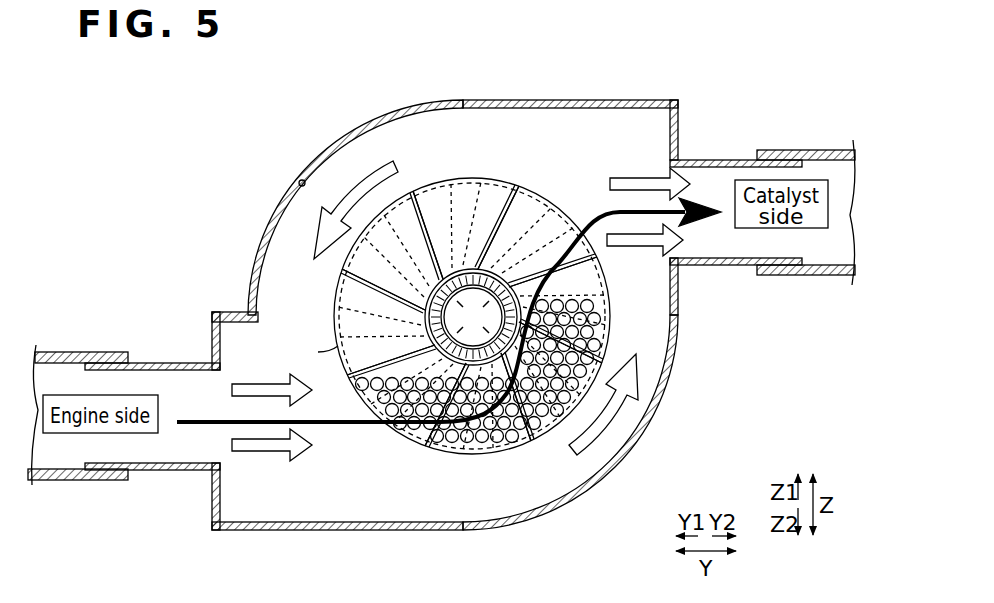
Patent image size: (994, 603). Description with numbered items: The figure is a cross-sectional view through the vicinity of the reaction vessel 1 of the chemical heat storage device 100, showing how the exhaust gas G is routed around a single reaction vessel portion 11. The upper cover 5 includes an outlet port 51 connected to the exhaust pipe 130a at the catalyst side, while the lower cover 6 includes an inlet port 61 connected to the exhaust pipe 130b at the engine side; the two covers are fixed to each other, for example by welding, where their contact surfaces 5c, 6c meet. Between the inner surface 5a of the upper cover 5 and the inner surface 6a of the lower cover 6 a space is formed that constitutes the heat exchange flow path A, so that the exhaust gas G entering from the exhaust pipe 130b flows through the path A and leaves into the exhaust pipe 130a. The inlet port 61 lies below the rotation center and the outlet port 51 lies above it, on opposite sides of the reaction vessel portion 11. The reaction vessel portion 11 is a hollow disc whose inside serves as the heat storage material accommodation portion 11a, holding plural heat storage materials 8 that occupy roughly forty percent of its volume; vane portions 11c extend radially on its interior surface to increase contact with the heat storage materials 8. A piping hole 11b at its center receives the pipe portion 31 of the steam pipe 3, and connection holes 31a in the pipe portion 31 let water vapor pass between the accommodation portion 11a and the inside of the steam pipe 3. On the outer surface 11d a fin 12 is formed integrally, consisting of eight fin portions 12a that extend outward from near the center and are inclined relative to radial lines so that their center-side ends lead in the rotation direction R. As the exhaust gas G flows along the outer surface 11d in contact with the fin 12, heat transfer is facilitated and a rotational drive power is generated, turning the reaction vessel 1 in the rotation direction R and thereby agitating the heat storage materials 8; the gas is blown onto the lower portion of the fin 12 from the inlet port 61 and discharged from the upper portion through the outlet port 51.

The chemical heat storage device 100 is at (706, 72).
The reaction vessel 1 is at (597, 198).
The steam pipe 3 is at (472, 316).
The pipe portion 31 is at (472, 268).
The connection hole 31a is at (565, 195).
The upper cover 5 is at (268, 238).
The inner surface of the upper cover 5a is at (300, 181).
The contact surface of the upper cover 5c is at (218, 345).
The lower cover 6 is at (630, 442).
The inner surface of the lower cover 6a is at (520, 518).
The contact surface of the lower cover 6c is at (238, 318).
The heat storage material 8 is at (545, 452).
The reaction vessel portion 11 is at (430, 182).
The heat storage material accommodation portion 11a is at (600, 265).
The piping hole 11b is at (447, 188).
The vane portion 11c is at (333, 282).
The outer surface of the reaction vessel portion 11d is at (540, 190).
The fin 12 is at (472, 316).
The fin portion 12a is at (510, 183).
The outlet port 51 is at (742, 160).
The inlet port 61 is at (140, 363).
The exhaust pipe at the catalyst side 130a is at (822, 150).
The exhaust pipe at the engine side 130b is at (73, 352).
The exhaust gas G is at (643, 178).
The heat exchange flow path A is at (345, 440).
The rotation direction R is at (345, 190).